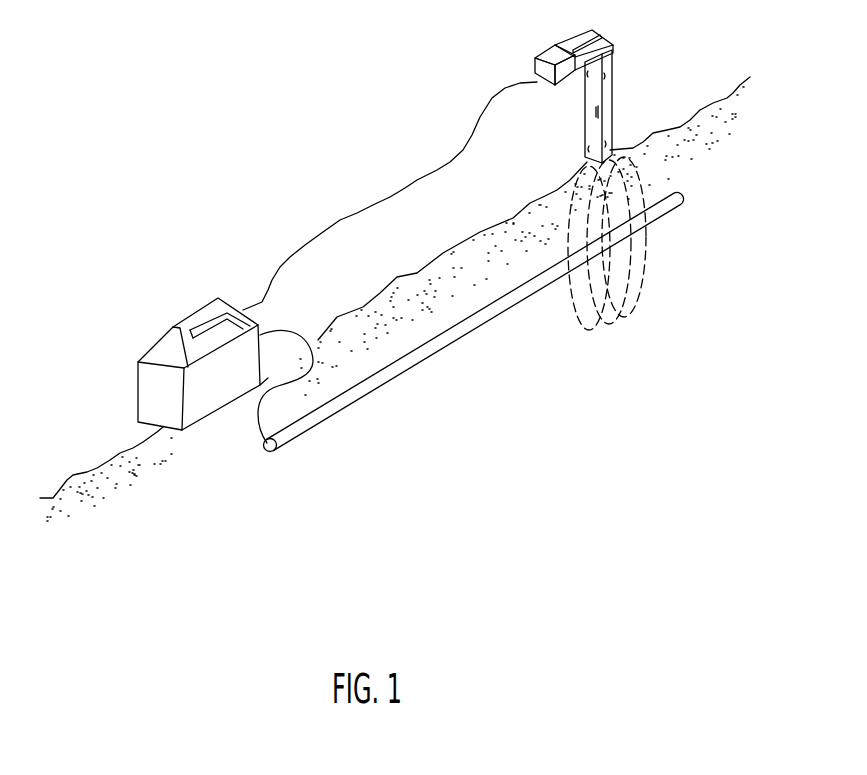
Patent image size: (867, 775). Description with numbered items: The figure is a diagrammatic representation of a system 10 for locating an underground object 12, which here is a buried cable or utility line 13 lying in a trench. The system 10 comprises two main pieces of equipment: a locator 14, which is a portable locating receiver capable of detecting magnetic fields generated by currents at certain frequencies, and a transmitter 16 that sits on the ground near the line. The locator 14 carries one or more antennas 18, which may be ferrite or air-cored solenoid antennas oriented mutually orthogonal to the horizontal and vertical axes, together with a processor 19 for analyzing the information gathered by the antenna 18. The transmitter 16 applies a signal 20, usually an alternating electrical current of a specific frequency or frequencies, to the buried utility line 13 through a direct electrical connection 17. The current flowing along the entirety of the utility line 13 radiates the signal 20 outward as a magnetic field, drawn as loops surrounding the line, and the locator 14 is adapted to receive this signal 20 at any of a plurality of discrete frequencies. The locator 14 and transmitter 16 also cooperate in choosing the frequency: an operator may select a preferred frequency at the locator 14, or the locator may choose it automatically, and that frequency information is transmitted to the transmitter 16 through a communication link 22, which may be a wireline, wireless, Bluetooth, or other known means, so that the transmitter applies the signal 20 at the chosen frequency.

The system 10 is at (297, 95).
The underground object 12 is at (457, 378).
The buried cable or utility line 13 is at (315, 417).
The locator 14 is at (547, 50).
The transmitter 16 is at (173, 300).
The direct electrical connection 17 is at (257, 410).
The antenna 18 is at (616, 100).
The processor 19 is at (597, 40).
The signal 20 is at (633, 310).
The communication link 22 is at (430, 172).